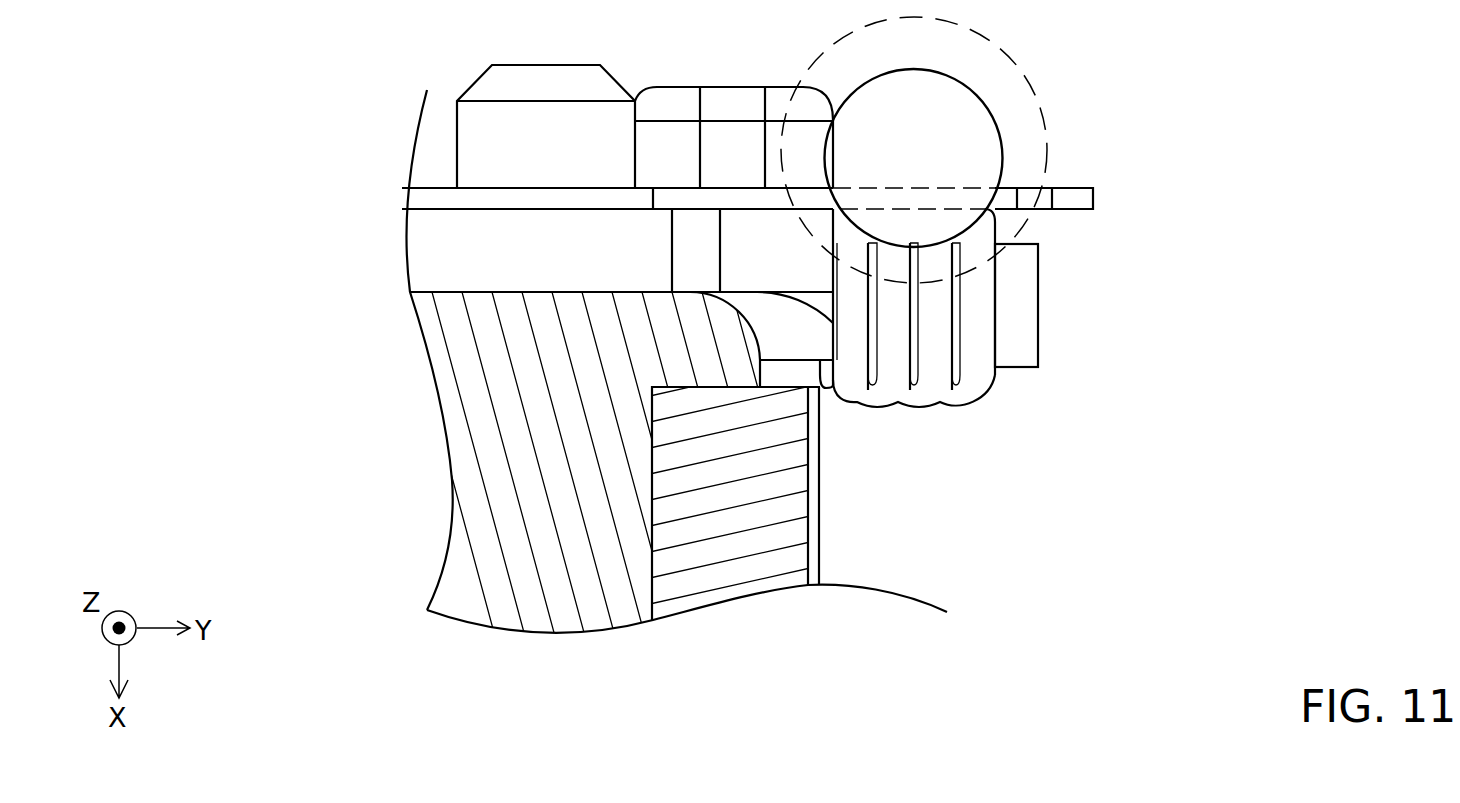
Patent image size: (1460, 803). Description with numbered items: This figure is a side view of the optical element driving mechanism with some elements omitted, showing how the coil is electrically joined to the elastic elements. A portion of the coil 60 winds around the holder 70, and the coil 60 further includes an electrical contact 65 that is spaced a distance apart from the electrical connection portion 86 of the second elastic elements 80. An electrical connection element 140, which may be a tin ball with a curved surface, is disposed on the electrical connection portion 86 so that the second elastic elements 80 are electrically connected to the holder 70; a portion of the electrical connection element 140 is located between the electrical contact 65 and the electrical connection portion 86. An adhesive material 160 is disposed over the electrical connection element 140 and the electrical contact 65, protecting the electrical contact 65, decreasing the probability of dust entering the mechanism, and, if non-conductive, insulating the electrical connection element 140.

The adhesive material 160 is at (1005, 60).
The electrical connection element 140 is at (913, 113).
The electrical connection portion 86 is at (912, 202).
The second elastic elements 80 is at (1077, 198).
The electrical contact 65 is at (950, 290).
The holder 70 is at (1015, 330).
The coil 60 is at (723, 517).